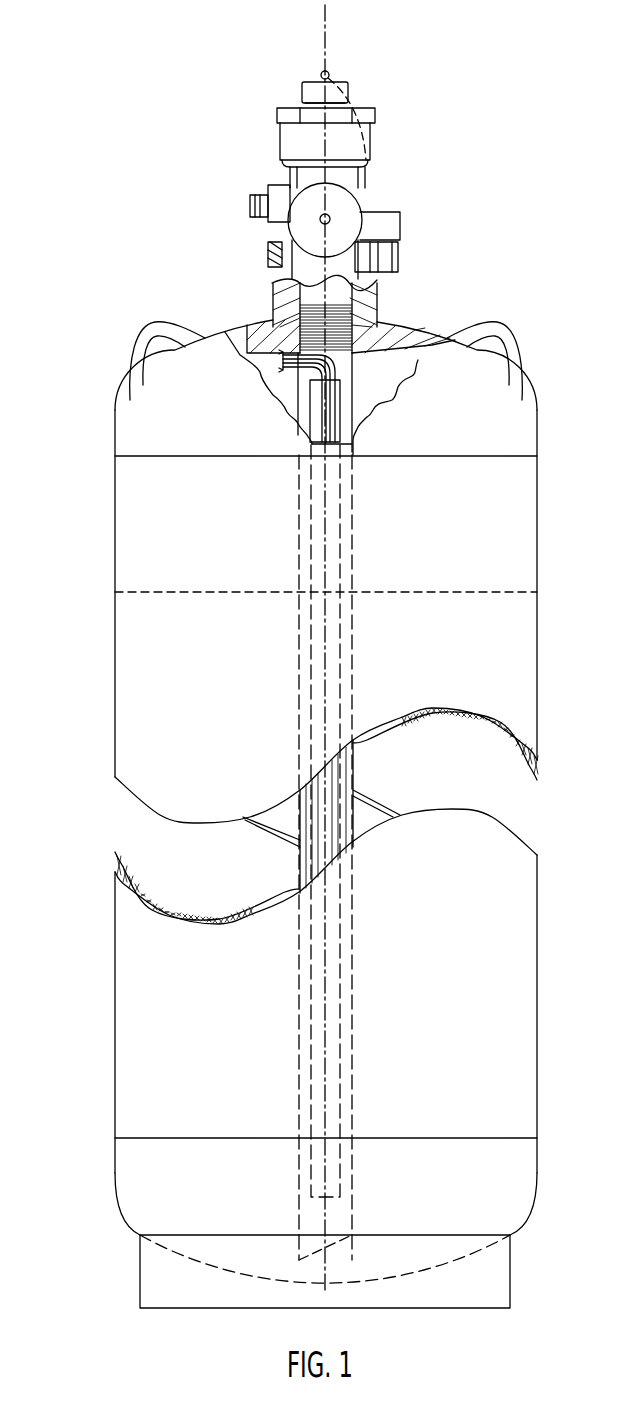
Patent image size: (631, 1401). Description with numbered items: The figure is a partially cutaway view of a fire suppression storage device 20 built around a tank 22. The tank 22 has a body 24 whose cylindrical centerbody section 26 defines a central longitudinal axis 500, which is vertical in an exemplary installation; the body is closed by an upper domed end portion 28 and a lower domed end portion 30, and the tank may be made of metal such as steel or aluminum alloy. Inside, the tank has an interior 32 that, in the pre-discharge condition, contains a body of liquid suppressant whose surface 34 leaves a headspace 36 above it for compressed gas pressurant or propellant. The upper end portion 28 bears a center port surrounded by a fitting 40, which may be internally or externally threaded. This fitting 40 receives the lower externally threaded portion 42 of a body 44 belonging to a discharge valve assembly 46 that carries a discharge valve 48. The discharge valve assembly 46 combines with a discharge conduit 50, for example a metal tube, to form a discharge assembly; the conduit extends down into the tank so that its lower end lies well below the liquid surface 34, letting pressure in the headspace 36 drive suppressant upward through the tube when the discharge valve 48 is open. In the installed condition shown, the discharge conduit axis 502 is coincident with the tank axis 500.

The fire suppression storage device 20 is at (48, 296).
The tank 22 is at (92, 556).
The body 24 is at (152, 1013).
The cylindrical centerbody section 26 is at (142, 957).
The upper domed end portion 28 is at (394, 366).
The lower domed end portion 30 is at (498, 1165).
The interior 32 is at (460, 347).
The surface 34 is at (448, 592).
The headspace 36 is at (361, 393).
The fitting 40 is at (403, 340).
The lower externally threaded portion 42 is at (373, 307).
The body 44 is at (268, 265).
The discharge valve assembly 46 is at (374, 202).
The discharge valve 48 is at (384, 139).
The discharge conduit 50 is at (367, 408).
The central longitudinal axis 500 is at (327, 62).
The discharge conduit axis 502 is at (347, 119).